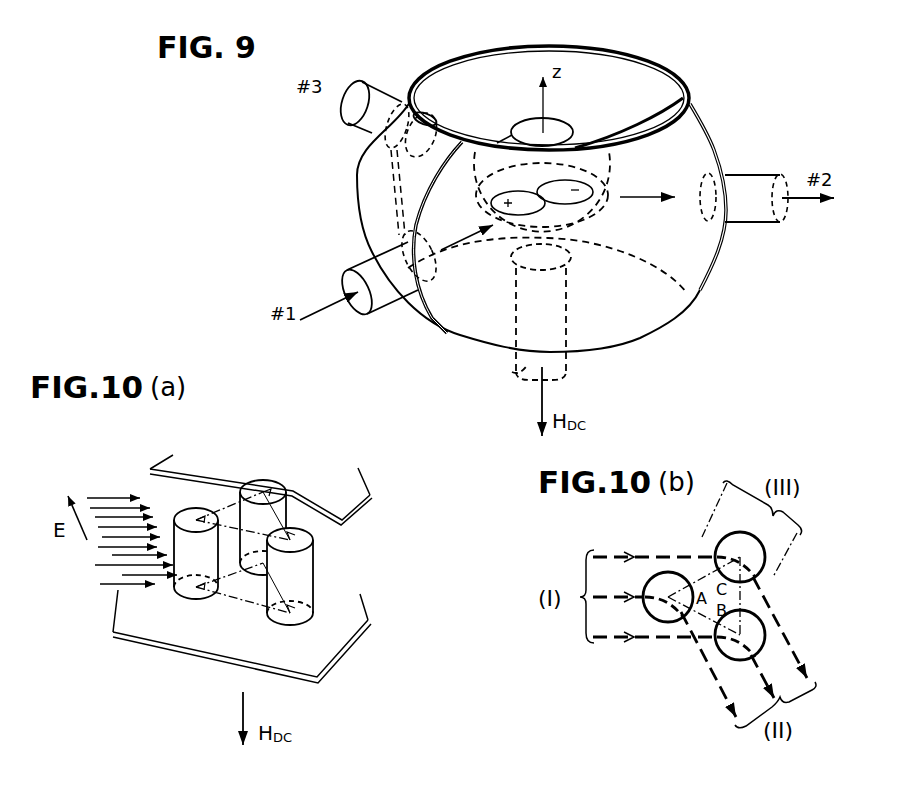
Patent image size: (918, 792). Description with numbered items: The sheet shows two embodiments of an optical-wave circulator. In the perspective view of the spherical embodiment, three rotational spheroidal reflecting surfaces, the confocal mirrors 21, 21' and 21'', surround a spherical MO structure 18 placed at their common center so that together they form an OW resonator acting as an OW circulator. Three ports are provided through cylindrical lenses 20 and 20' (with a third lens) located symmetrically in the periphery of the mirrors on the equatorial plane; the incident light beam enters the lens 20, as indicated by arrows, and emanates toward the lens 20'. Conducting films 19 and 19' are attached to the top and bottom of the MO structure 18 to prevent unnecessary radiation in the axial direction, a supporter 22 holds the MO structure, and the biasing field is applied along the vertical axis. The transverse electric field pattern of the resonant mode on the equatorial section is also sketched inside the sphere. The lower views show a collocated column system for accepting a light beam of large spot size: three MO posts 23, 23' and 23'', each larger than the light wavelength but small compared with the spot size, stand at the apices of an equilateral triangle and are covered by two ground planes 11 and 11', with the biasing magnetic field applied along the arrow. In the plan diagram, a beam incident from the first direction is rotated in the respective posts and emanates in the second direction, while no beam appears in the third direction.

In FIG. 10A, the ground plane 11 is at (284, 490).
In FIG. 10A, the ground plane 11' is at (269, 636).
In FIG. 9, the spherical MO structure 18 is at (590, 133).
In FIG. 9, the conducting film 19 is at (578, 73).
In FIG. 9, the conducting film 19' is at (602, 317).
In FIG. 9, the cylindrical lens 20 is at (362, 272).
In FIG. 9, the cylindrical lens 20' is at (532, 178).
In FIG. 9, the confocal mirror 21 is at (549, 76).
In FIG. 9, the confocal mirror 21' is at (409, 227).
In FIG. 9, the confocal mirror 21'' is at (576, 228).
In FIG. 9, the supporter 22 is at (528, 364).
In FIG. 10A, the MO post 23 is at (173, 606).
In FIG. 10A, the MO post 23' is at (329, 616).
In FIG. 10A, the MO post 23'' is at (272, 498).